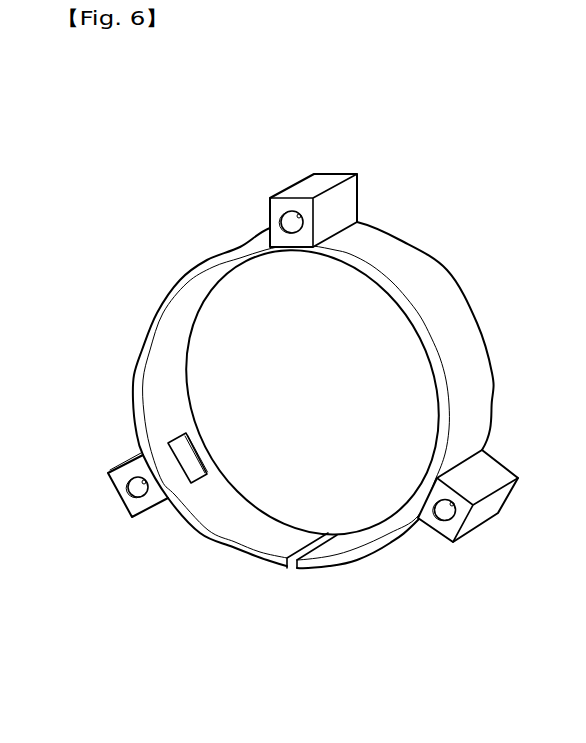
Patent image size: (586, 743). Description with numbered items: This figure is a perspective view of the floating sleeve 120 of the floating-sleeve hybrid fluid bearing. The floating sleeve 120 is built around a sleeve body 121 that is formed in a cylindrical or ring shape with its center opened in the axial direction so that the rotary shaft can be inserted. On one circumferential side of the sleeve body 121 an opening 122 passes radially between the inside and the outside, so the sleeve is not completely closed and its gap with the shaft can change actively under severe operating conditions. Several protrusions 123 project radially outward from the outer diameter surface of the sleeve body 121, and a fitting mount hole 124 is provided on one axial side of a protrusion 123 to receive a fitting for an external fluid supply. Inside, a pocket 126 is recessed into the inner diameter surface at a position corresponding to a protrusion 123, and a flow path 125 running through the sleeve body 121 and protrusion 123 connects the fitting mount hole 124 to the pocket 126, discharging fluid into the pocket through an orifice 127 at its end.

The floating sleeve 120 is at (281, 357).
The sleeve body 121 is at (398, 250).
The opening 122 is at (292, 569).
The protrusion 123 is at (277, 176).
The fitting mount hole 124 is at (284, 222).
The flow path 125 is at (127, 484).
The pocket 126 is at (235, 454).
The orifice 127 is at (186, 461).